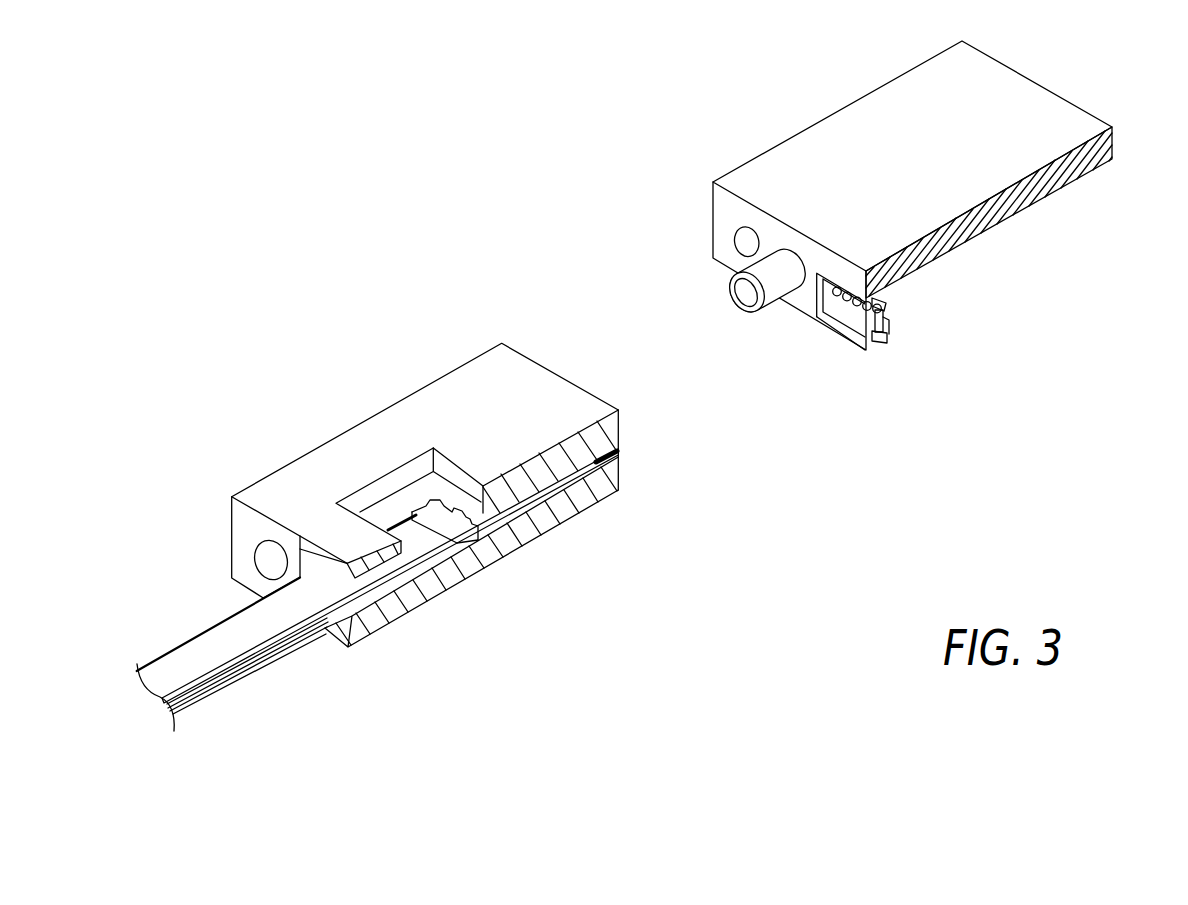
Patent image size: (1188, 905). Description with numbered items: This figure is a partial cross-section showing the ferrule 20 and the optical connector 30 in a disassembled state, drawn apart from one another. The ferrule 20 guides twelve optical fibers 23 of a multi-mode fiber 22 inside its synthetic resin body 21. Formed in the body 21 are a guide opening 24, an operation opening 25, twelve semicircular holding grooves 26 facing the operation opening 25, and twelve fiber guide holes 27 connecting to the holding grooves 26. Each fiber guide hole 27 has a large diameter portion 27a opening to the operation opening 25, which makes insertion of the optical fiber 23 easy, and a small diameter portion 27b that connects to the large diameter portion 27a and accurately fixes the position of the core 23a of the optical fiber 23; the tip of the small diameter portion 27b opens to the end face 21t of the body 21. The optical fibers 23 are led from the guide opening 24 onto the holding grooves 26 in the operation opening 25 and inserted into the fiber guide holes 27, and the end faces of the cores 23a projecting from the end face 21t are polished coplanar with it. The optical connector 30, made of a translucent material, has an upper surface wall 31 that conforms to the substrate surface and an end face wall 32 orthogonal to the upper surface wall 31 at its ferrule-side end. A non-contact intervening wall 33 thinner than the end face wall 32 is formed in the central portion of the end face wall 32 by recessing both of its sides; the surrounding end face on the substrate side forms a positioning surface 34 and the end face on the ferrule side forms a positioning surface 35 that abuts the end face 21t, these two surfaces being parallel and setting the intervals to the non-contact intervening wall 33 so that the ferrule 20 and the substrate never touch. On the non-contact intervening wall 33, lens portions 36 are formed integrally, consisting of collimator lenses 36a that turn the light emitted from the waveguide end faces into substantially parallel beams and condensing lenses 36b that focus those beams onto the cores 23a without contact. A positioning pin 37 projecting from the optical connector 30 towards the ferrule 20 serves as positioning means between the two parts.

The ferrule 20 is at (433, 500).
The body 21 is at (466, 470).
The end face 21t is at (622, 423).
The multi-mode fiber 22 is at (213, 648).
The optical fiber 23 is at (447, 503).
The core 23a is at (620, 475).
The guide opening 24 is at (290, 527).
The operation opening 25 is at (410, 473).
The holding groove 26 is at (455, 480).
The fiber guide hole 27 is at (487, 552).
The large diameter portion 27a is at (550, 500).
The small diameter portion 27b is at (446, 576).
The optical connector 30 is at (890, 237).
The upper surface wall 31 is at (1030, 105).
The end face wall 32 is at (880, 343).
The non-contact intervening wall 33 is at (877, 337).
The positioning surface 34 is at (889, 333).
The positioning surface 35 is at (843, 340).
The lens portion 36 is at (923, 306).
The collimator lens 36a is at (887, 300).
The condensing lens 36b is at (883, 318).
The positioning pin 37 is at (781, 285).